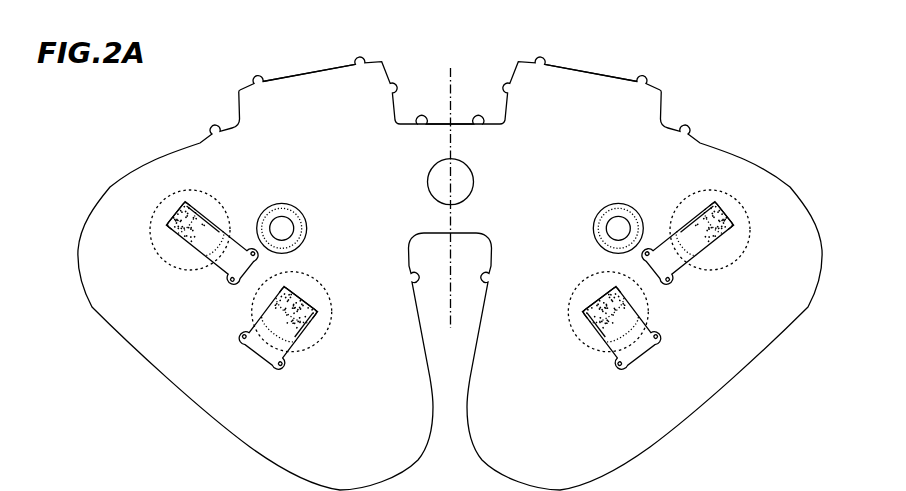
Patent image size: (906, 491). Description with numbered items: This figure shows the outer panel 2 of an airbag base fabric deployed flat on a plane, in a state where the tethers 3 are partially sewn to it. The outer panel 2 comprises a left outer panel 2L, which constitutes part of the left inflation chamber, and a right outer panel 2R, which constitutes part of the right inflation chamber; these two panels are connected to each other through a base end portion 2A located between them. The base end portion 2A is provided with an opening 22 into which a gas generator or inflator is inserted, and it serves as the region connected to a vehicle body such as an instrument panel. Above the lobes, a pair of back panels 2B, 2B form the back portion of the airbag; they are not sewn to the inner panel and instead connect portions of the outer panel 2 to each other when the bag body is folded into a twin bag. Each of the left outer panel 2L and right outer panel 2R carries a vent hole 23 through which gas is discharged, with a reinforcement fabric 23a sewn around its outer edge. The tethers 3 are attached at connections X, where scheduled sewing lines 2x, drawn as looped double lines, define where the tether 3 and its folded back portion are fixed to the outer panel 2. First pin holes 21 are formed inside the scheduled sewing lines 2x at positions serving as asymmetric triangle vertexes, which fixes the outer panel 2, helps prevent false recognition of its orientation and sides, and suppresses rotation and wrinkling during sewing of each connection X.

The outer panel 2 is at (227, 55).
The base end portion 2A is at (443, 123).
The back panels 2B is at (315, 78).
The left outer panel 2L is at (348, 410).
The right outer panel 2R is at (569, 410).
The scheduled sewing lines 2x is at (170, 236).
The tethers 3 is at (223, 273).
The first pin holes 21 is at (187, 222).
The opening 22 is at (474, 182).
The vent hole 23 is at (285, 225).
The reinforcement fabric 23a is at (307, 230).
The connections X is at (153, 212).